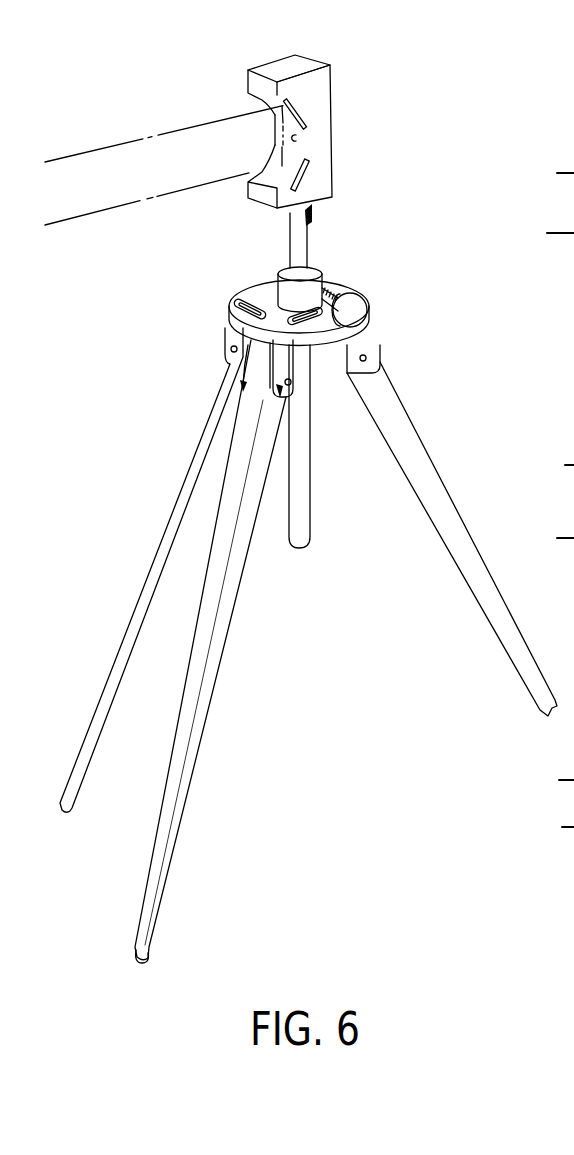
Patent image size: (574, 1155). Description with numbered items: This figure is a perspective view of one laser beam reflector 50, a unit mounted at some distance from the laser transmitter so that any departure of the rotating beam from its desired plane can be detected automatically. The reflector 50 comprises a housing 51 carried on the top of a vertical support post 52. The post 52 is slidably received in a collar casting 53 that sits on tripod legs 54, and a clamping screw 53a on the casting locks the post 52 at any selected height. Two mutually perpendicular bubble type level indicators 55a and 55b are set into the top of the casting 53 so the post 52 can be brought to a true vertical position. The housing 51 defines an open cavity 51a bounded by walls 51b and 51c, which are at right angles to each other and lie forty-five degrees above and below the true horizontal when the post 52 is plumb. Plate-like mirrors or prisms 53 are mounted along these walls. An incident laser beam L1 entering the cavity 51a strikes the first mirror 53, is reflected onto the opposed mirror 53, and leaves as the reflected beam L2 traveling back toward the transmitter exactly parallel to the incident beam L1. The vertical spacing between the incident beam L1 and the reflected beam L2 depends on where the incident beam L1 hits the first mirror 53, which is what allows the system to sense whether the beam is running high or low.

The laser beam reflector 50 is at (346, 195).
The housing 51 is at (323, 123).
The open cavity 51a is at (297, 140).
The wall 51b is at (281, 111).
The wall 51c is at (307, 175).
The vertical support post 52 is at (302, 232).
The plate-like mirror or prism 53 is at (278, 121).
The clamping screw 53a is at (360, 315).
The tripod legs 54 is at (308, 645).
The bubble type level indicator 55a is at (230, 312).
The bubble type level indicator 55b is at (310, 323).
The incident laser beam L1 is at (118, 144).
The reflected beam L2 is at (197, 188).